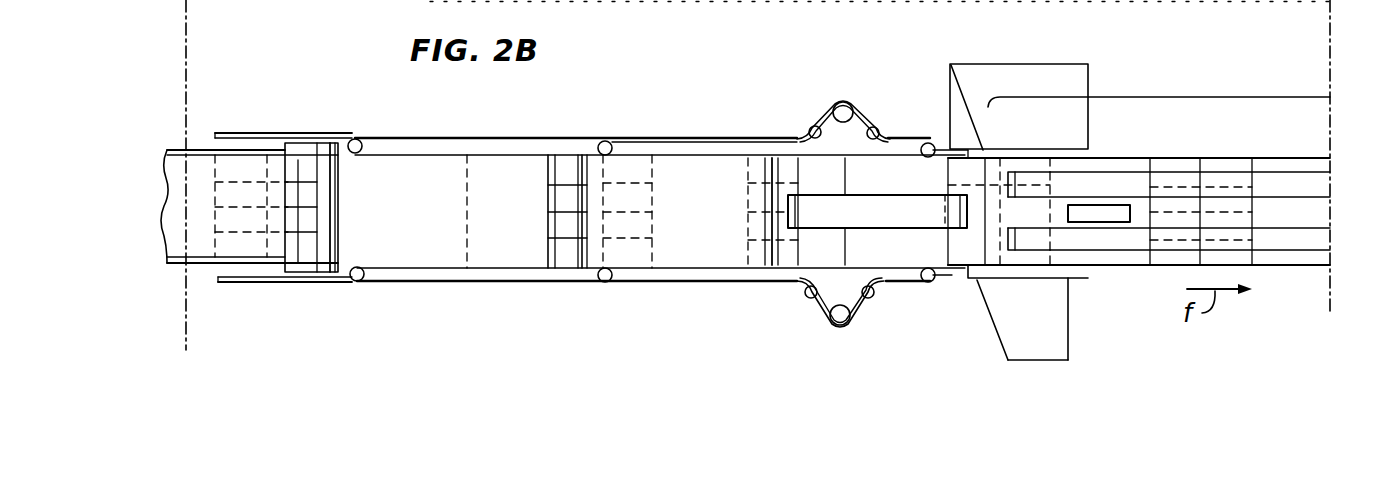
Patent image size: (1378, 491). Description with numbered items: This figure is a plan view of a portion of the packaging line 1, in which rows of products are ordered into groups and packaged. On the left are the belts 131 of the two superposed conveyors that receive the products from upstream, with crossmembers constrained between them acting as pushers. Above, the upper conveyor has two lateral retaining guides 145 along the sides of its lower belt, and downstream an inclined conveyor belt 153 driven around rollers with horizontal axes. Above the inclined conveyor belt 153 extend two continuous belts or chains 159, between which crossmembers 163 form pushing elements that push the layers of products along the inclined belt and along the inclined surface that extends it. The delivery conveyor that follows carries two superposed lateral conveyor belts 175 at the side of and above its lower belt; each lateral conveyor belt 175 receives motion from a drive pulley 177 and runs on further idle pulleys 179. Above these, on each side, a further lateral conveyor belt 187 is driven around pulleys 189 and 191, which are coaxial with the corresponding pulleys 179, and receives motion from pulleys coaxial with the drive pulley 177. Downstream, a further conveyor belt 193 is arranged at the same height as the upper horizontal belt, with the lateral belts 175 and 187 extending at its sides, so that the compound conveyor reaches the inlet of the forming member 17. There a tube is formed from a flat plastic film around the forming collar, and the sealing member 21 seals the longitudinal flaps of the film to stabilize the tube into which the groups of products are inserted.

The line 1 is at (660, 15).
The forming member 17 is at (1177, 97).
The sealing member 21 is at (1104, 206).
The belts 131 is at (268, 133).
The lateral retaining guides 145 is at (200, 150).
The inclined conveyor belt 153 is at (438, 243).
The continuous belts or continuous chains 159 is at (518, 138).
The crossmembers 163 is at (338, 200).
The lateral conveyor belts 175 is at (557, 288).
The drive pulley 177 is at (843, 102).
The idle pulleys 179 is at (358, 139).
The conveyor belt 187 is at (688, 142).
The pulleys 189 is at (610, 141).
The pulleys 191 is at (812, 125).
The conveyor belt 193 is at (871, 206).